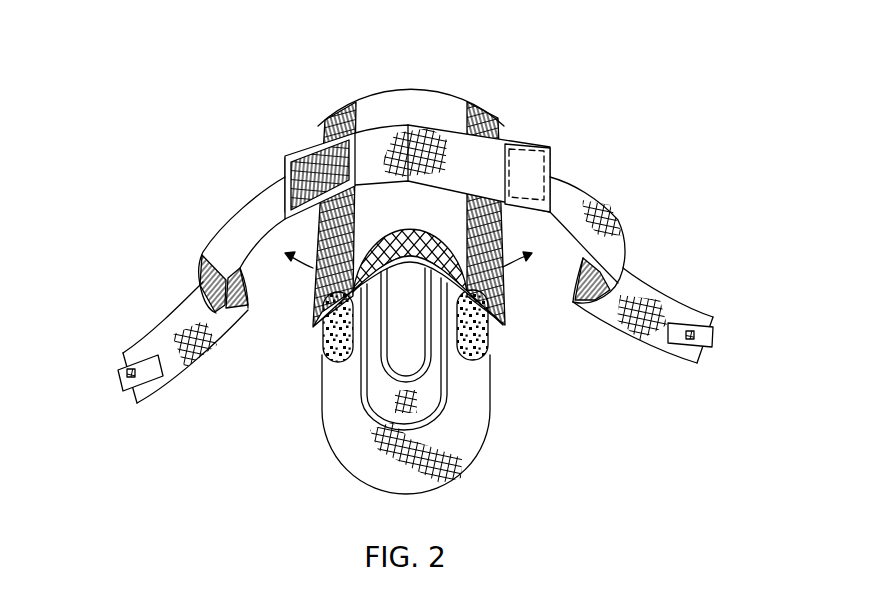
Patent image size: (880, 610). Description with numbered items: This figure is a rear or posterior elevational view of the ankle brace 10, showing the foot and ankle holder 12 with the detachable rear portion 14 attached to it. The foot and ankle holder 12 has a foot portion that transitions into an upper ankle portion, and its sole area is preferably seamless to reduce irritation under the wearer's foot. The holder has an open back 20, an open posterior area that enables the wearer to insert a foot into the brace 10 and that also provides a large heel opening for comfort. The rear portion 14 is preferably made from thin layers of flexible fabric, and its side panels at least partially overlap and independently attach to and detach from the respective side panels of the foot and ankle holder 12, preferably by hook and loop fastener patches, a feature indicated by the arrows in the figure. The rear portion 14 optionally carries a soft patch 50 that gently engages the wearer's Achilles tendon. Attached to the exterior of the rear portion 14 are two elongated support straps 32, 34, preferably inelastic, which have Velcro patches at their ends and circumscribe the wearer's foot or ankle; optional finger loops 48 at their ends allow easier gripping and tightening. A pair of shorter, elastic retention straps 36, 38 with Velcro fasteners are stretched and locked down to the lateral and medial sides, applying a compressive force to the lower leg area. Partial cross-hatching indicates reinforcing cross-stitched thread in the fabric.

The ankle brace 10 is at (242, 123).
The foot and ankle holder 12 is at (473, 393).
The rear portion 14 is at (428, 102).
The open back 20 is at (387, 392).
The elongated support strap 32 is at (228, 345).
The elongated support strap 34 is at (607, 325).
The retention strap 36 is at (303, 142).
The retention strap 38 is at (510, 140).
The finger loop 48 is at (118, 382).
The soft patch 50 is at (410, 257).